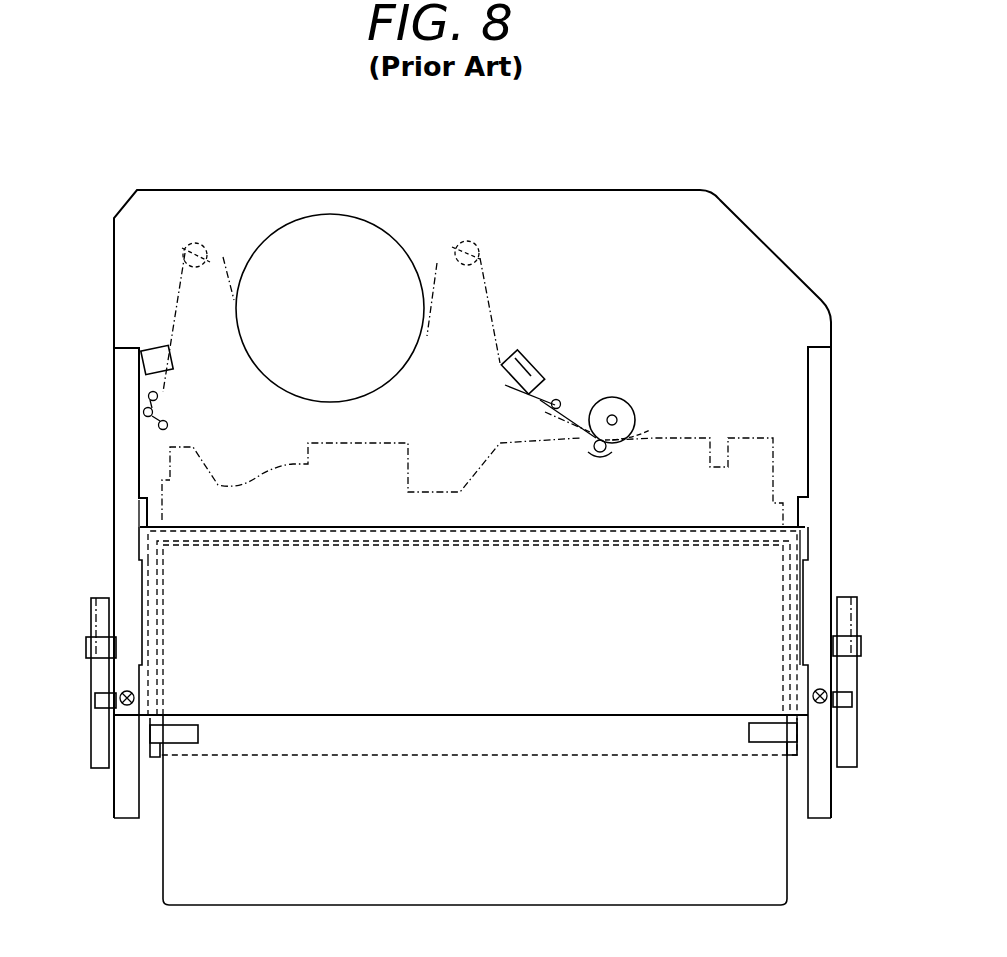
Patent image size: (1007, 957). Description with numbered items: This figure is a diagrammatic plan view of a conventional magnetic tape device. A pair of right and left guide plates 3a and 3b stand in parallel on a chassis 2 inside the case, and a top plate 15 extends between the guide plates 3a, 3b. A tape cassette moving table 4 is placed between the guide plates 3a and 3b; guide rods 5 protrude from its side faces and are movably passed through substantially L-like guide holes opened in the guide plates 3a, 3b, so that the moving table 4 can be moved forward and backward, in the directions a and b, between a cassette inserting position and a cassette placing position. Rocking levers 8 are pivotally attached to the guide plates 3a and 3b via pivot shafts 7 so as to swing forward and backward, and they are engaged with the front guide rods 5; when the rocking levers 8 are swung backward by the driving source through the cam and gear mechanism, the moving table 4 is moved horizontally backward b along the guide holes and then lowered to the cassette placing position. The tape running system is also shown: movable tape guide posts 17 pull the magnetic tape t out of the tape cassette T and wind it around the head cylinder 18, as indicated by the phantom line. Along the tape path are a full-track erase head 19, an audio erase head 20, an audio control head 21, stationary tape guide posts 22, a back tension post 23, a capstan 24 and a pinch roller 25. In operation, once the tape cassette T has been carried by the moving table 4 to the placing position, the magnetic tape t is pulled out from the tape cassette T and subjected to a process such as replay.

The chassis 2 is at (768, 258).
The guide plate 3a is at (822, 492).
The guide plate 3b is at (122, 478).
The tape cassette moving table 4 is at (150, 736).
The guide rods 5 is at (153, 700).
The pivot shafts 7 is at (92, 648).
The rocking levers 8 is at (97, 772).
The top plate 15 is at (556, 527).
The movable tape guide posts 17 is at (214, 250).
The head cylinder 18 is at (366, 232).
The full-track erase head 19 is at (157, 346).
The audio erase head 20 is at (528, 354).
The audio control head 21 is at (540, 374).
The stationary tape guide posts 22 is at (159, 425).
The back tension post 23 is at (158, 410).
The capstan 24 is at (606, 453).
The pinch roller 25 is at (630, 408).
The magnetic tape t is at (495, 293).
The tape cassette T is at (355, 778).
The forward motion direction a is at (472, 606).
The backward motion direction b is at (468, 608).